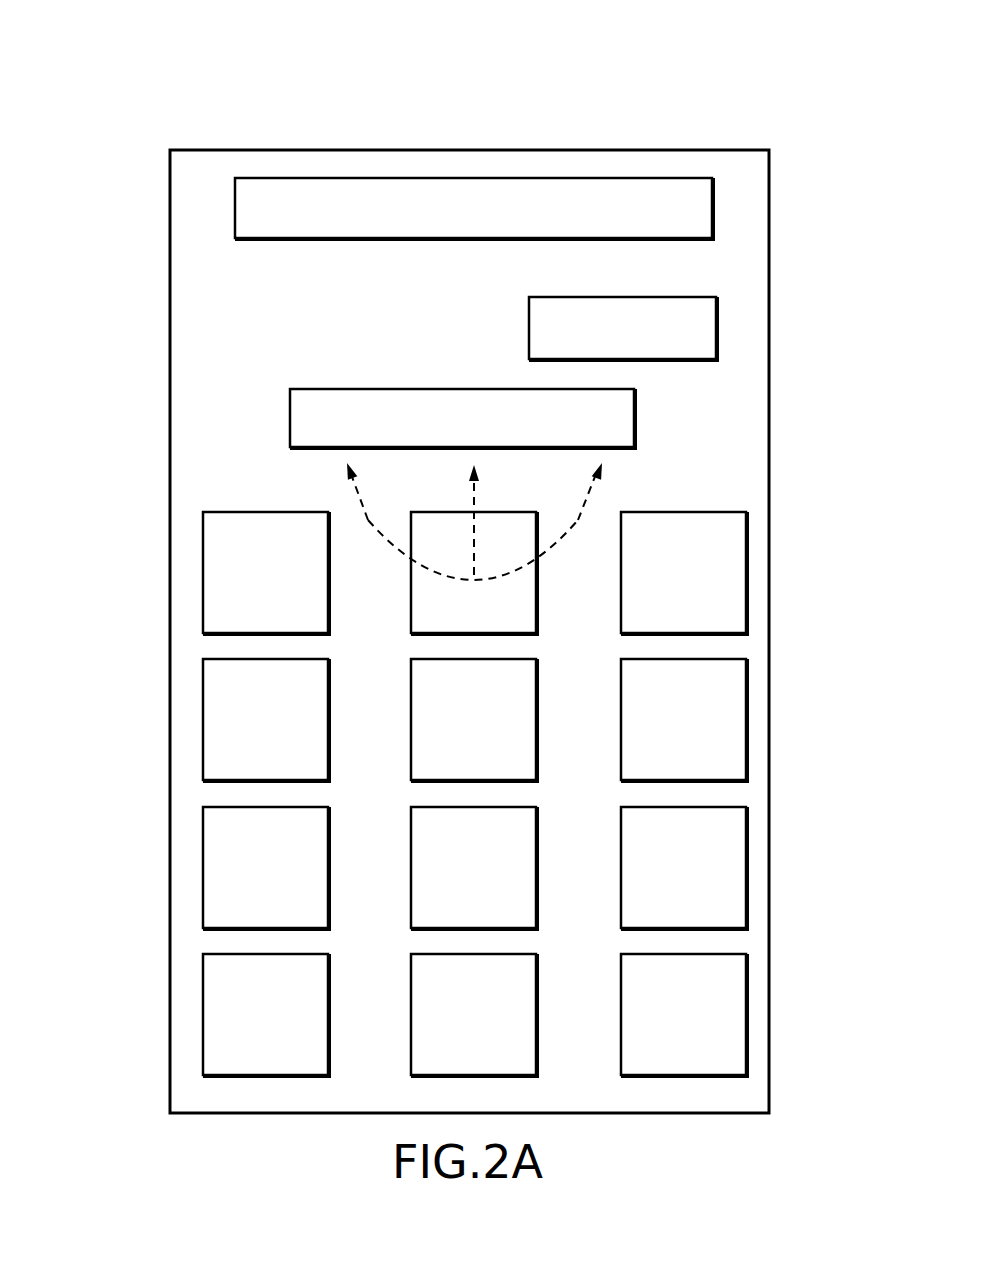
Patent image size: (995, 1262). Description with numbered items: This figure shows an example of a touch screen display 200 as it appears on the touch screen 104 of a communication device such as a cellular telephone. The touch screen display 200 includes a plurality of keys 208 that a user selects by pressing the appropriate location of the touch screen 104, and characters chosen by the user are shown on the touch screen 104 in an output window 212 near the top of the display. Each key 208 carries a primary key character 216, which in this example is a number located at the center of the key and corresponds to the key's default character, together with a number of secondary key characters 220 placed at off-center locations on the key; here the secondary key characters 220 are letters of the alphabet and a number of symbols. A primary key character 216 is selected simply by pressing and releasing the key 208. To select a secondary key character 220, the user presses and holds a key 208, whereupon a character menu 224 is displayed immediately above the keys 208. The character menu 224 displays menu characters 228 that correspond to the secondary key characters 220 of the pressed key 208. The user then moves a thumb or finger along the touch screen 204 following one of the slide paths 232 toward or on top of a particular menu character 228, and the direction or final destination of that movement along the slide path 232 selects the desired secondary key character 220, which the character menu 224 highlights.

The touch screen display 200 is at (180, 53).
The touch screen 104 is at (744, 181).
The output window 212 is at (613, 191).
The touch screen 204 is at (698, 333).
The character menu 224 is at (315, 404).
The menu characters 228 is at (583, 410).
The slide paths 232 is at (575, 520).
The keys 208 is at (204, 858).
The secondary key characters 220 is at (655, 530).
The primary key character 216 is at (700, 575).